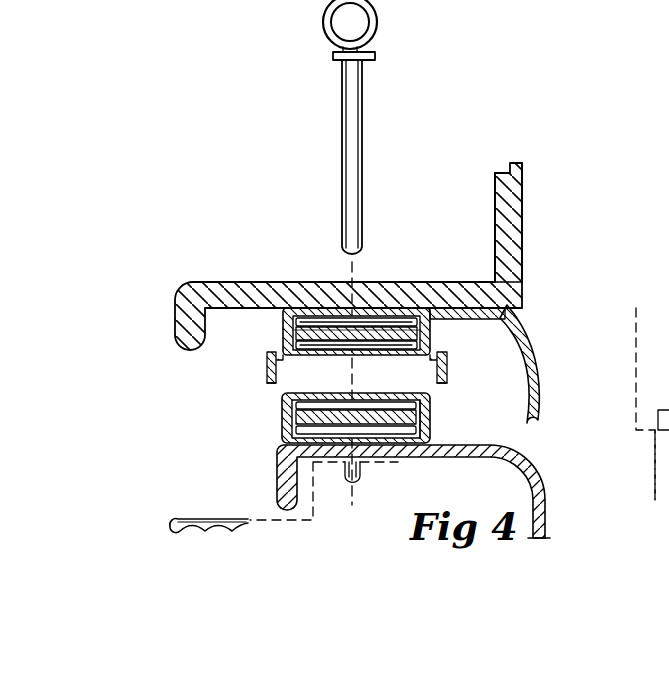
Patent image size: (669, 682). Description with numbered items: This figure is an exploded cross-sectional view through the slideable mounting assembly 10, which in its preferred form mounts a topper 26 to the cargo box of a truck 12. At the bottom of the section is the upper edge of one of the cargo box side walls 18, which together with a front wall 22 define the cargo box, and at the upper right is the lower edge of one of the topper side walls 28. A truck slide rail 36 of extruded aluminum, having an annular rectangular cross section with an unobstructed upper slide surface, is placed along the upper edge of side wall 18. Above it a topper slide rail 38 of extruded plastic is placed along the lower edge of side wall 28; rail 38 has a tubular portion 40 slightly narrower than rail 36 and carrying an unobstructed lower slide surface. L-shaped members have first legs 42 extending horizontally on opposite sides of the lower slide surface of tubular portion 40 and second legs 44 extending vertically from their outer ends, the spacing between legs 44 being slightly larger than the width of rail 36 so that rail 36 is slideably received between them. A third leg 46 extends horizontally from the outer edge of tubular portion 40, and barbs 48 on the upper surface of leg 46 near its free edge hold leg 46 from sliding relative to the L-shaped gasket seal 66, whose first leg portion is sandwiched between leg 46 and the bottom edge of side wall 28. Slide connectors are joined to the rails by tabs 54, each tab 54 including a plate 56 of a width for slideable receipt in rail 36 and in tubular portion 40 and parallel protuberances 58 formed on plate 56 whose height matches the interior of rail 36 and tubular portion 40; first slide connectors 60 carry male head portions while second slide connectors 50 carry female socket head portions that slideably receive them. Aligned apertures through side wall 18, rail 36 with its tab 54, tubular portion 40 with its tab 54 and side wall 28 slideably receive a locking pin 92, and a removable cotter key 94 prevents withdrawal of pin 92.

The slideable mounting assembly 10 is at (592, 165).
The truck 12 is at (540, 468).
The side walls 18 is at (547, 529).
The front wall 22 is at (655, 462).
The topper 26 is at (530, 172).
The side walls 28 is at (522, 200).
The truck slide rails 36 is at (282, 430).
The topper slide rails 38 is at (330, 302).
The tubular portion 40 is at (283, 322).
The first legs 42 is at (268, 354).
The second legs 44 is at (268, 378).
The third leg 46 is at (480, 320).
The barbs 48 is at (505, 296).
The second slide connectors 50 is at (436, 412).
The tabs 54 is at (317, 306).
The plate 56 is at (333, 356).
The protuberances 58 is at (392, 320).
The first slide connectors 60 is at (388, 302).
The gasket seal 66 is at (548, 378).
The locking pin 92 is at (346, 83).
The cotter key 94 is at (212, 519).